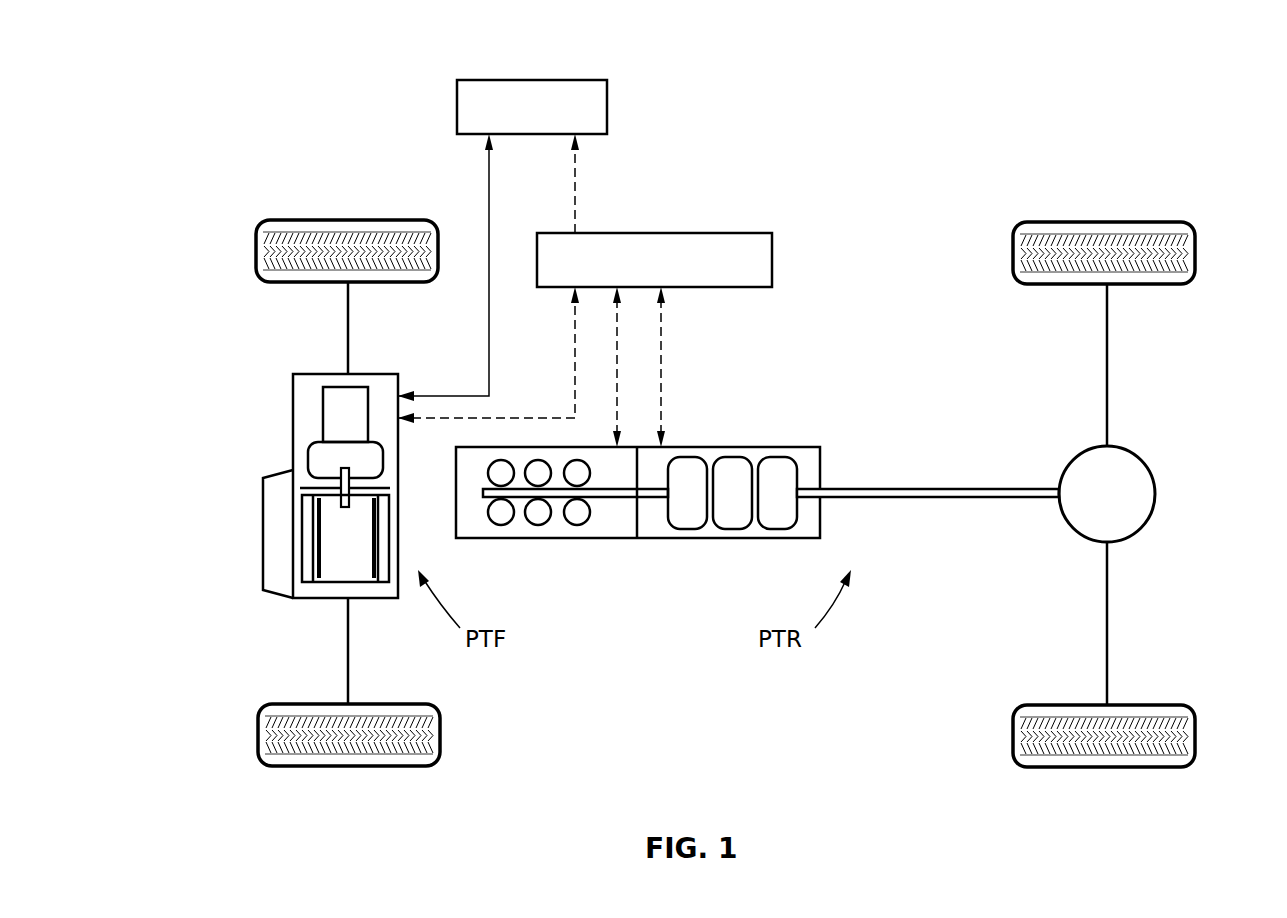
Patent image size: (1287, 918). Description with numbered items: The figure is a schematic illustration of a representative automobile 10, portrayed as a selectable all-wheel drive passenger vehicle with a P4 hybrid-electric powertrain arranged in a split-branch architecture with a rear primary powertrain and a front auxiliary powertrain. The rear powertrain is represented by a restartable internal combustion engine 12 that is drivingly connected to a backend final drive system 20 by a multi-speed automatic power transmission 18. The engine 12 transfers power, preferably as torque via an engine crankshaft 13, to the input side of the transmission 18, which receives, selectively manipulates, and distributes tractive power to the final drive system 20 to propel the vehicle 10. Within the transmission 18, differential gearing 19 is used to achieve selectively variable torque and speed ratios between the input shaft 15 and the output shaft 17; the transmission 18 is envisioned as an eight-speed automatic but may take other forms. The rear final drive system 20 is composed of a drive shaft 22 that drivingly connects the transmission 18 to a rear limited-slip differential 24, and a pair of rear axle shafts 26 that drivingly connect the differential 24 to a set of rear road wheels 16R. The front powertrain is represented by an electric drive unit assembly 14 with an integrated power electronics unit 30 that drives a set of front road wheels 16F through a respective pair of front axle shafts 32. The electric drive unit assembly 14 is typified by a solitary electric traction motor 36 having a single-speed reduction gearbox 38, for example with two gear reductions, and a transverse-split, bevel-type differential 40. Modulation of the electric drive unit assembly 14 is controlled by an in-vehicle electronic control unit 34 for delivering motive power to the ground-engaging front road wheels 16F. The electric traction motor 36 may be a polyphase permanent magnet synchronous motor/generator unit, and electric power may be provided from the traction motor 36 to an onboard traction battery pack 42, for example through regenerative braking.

The automobile 10 is at (236, 76).
The internal combustion engine 12 is at (528, 538).
The engine crankshaft 13 is at (613, 500).
The electric drive unit assembly 14 is at (284, 486).
The input shaft 15 is at (655, 502).
The front road wheels 16F is at (290, 220).
The rear road wheels 16R is at (1046, 222).
The output shaft 17 is at (805, 508).
The multi-speed automatic power transmission 18 is at (733, 447).
The differential gearing 19 is at (746, 503).
The final drive system 20 is at (1029, 494).
The drive shaft 22 is at (1002, 489).
The rear limited-slip differential 24 is at (1136, 530).
The rear axle shafts 26 is at (1107, 308).
The integrated power electronics unit 30 is at (263, 548).
The front axle shafts 32 is at (348, 312).
The electronic control unit 34 is at (750, 233).
The electric traction motor 36 is at (302, 515).
The single-speed reduction gearbox 38 is at (323, 410).
The bevel-type differential 40 is at (310, 455).
The traction battery pack 42 is at (457, 89).